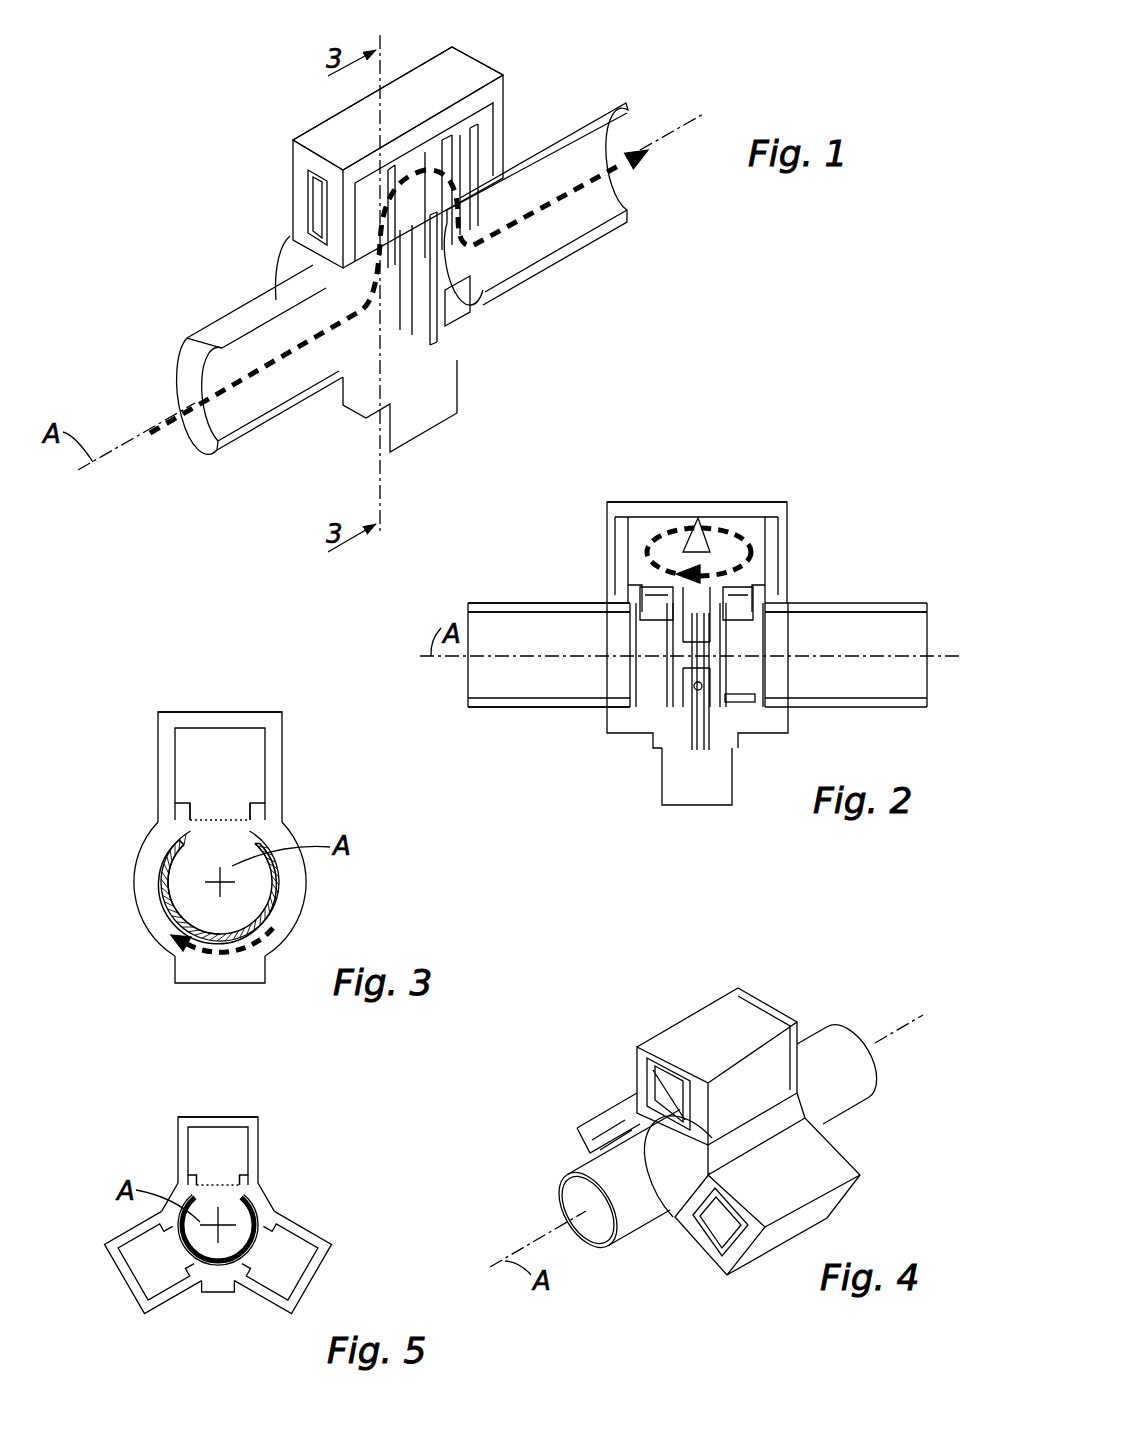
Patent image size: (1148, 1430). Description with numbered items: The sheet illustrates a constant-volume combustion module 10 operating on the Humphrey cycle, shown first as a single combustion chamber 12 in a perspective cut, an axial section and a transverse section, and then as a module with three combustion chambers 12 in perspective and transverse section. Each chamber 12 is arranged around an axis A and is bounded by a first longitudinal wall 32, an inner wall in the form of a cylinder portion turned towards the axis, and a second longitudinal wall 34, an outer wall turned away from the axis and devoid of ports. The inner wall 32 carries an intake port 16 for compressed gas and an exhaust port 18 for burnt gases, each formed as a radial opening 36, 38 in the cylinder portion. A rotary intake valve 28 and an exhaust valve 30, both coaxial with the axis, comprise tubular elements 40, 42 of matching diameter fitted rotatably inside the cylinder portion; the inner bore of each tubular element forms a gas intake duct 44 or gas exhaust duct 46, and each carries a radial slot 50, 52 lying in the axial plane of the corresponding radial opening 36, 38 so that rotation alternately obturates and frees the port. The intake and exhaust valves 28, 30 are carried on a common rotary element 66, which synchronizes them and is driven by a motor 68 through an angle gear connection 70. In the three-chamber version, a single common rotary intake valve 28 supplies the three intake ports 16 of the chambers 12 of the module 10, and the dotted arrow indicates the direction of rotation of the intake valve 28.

In FIG. 1, the combustion module 10 is at (512, 54).
In FIG. 2, the combustion module 10 is at (818, 520).
In FIG. 3, the combustion module 10 is at (168, 672).
In FIG. 5, the combustion module 10 is at (225, 1075).
In FIG. 4, the combustion module 10 is at (790, 978).
In FIG. 1, the combustion chamber 12 is at (290, 128).
In FIG. 2, the combustion chamber 12 is at (781, 503).
In FIG. 3, the combustion chamber 12 is at (283, 748).
In FIG. 5, the combustion chamber 12 is at (240, 1117).
In FIG. 4, the combustion chamber 12 is at (693, 1040).
In FIG. 1, the intake port 16 is at (362, 200).
In FIG. 2, the intake port 16 is at (652, 595).
In FIG. 3, the intake port 16 is at (216, 808).
In FIG. 5, the intake port 16 is at (222, 1177).
In FIG. 1, the exhaust port 18 is at (468, 225).
In FIG. 2, the exhaust port 18 is at (742, 592).
In FIG. 1, the rotary intake valve 28 is at (342, 352).
In FIG. 2, the rotary intake valve 28 is at (658, 672).
In FIG. 3, the rotary intake valve 28 is at (178, 885).
In FIG. 5, the rotary intake valve 28 is at (226, 1240).
In FIG. 1, the exhaust valve 30 is at (458, 272).
In FIG. 2, the exhaust valve 30 is at (740, 632).
In FIG. 1, the first longitudinal wall 32 is at (403, 203).
In FIG. 2, the first longitudinal wall 32 is at (685, 598).
In FIG. 3, the first longitudinal wall 32 is at (255, 788).
In FIG. 5, the first longitudinal wall 32 is at (240, 1165).
In FIG. 1, the second longitudinal wall 34 is at (440, 87).
In FIG. 2, the second longitudinal wall 34 is at (632, 502).
In FIG. 3, the second longitudinal wall 34 is at (248, 712).
In FIG. 5, the second longitudinal wall 34 is at (198, 1117).
In FIG. 1, the radial opening 36 is at (397, 185).
In FIG. 2, the radial opening 36 is at (638, 600).
In FIG. 3, the radial opening 36 is at (235, 820).
In FIG. 5, the radial opening 36 is at (243, 1184).
In FIG. 1, the radial opening 38 is at (490, 155).
In FIG. 2, the radial opening 38 is at (760, 598).
In FIG. 1, the tubular element 40 is at (222, 420).
In FIG. 2, the tubular element 40 is at (512, 710).
In FIG. 3, the tubular element 40 is at (286, 893).
In FIG. 5, the tubular element 40 is at (265, 1248).
In FIG. 1, the tubular element 42 is at (582, 212).
In FIG. 2, the tubular element 42 is at (878, 712).
In FIG. 1, the gas intake duct 44 is at (237, 408).
In FIG. 2, the gas intake duct 44 is at (493, 684).
In FIG. 3, the gas intake duct 44 is at (240, 916).
In FIG. 5, the gas intake duct 44 is at (180, 1219).
In FIG. 1, the gas exhaust duct 46 is at (612, 207).
In FIG. 2, the gas exhaust duct 46 is at (900, 683).
In FIG. 1, the radial slot 50 is at (378, 330).
In FIG. 2, the radial slot 50 is at (652, 630).
In FIG. 3, the radial slot 50 is at (172, 857).
In FIG. 5, the radial slot 50 is at (200, 1195).
In FIG. 1, the radial slot 52 is at (482, 248).
In FIG. 2, the radial slot 52 is at (755, 694).
In FIG. 1, the common rotary element 66 is at (572, 254).
In FIG. 2, the common rotary element 66 is at (567, 712).
In FIG. 4, the common rotary element 66 is at (628, 1212).
In FIG. 2, the motor 68 is at (688, 781).
In FIG. 2, the angle gear connection 70 is at (702, 692).